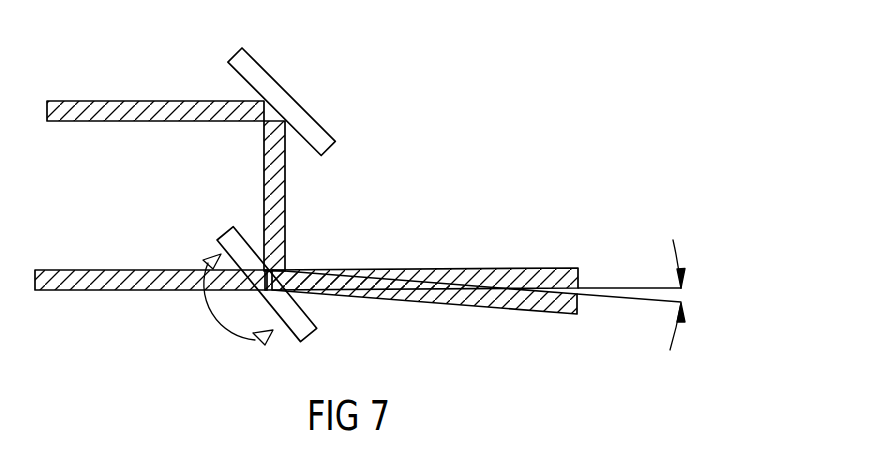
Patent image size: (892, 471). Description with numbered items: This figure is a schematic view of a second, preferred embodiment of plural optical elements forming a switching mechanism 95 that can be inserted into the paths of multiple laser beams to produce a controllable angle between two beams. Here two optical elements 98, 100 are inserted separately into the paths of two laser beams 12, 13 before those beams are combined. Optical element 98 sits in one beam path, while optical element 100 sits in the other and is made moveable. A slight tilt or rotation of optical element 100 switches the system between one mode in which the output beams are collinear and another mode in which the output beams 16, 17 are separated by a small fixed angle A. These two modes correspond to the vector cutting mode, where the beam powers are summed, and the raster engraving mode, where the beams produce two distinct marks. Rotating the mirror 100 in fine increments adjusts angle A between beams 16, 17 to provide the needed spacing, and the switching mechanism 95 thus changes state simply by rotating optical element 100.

The laser beam 12 is at (47, 276).
The laser beam 13 is at (75, 106).
The output beam 16 is at (560, 268).
The output beam 17 is at (563, 313).
The switching mechanism 95 is at (488, 145).
The optical element 98 is at (292, 112).
The optical element 100 is at (311, 330).